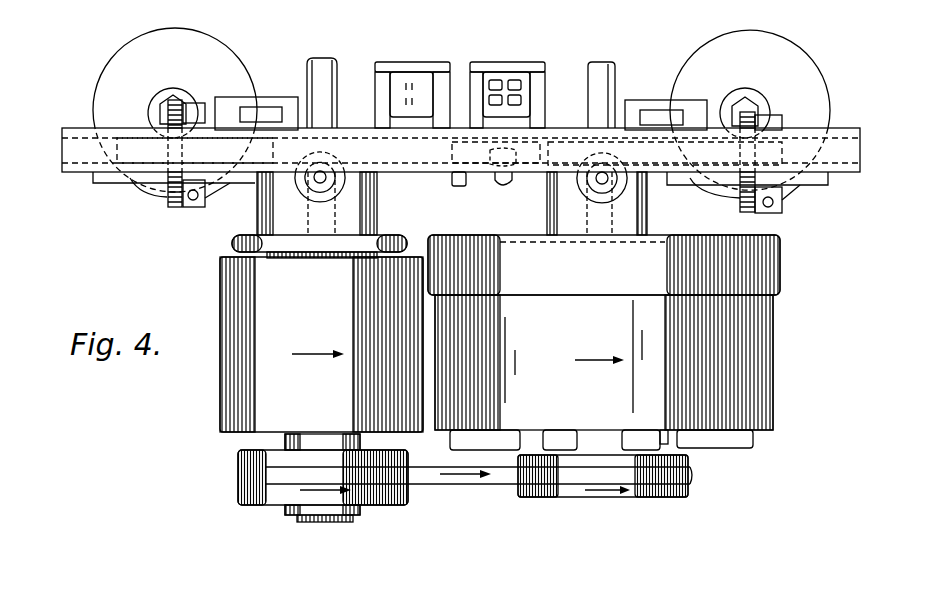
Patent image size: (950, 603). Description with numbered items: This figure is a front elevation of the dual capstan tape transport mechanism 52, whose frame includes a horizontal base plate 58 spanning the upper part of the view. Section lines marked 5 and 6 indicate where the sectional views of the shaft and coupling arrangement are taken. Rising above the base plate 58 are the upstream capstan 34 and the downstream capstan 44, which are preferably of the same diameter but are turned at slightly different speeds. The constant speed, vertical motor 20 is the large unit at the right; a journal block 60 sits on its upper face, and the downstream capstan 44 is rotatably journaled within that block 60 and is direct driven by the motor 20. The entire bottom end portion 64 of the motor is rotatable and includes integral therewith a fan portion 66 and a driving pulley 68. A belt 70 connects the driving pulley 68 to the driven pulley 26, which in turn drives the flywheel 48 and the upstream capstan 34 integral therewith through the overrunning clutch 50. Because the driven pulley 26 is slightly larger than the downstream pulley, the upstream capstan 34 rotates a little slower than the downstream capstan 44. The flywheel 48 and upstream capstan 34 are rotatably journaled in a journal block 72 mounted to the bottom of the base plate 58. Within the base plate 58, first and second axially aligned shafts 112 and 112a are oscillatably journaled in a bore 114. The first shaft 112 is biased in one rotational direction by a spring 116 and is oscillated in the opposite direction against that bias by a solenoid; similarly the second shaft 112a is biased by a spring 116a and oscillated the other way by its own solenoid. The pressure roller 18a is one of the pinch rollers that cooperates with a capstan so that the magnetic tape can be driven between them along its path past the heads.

The section line 5- 5 is at (196, 12).
The section line 6- 6 is at (277, 75).
The base plate 58 is at (73, 171).
The wheel 18a is at (720, 93).
The spring 116 is at (167, 198).
The spring 116a is at (740, 200).
The first shaft 112 is at (137, 142).
The second shaft 112a is at (568, 160).
The upstream capstan 34 is at (332, 60).
The downstream capstan 44 is at (612, 62).
The tape transport mechanism 52 is at (466, 42).
The bore 114 is at (452, 158).
The journal block 72 is at (360, 210).
The journal block 60 is at (552, 213).
The flywheel 48 is at (320, 330).
The motor 20 is at (585, 282).
The bottom end portion 64 is at (778, 297).
The fan portion 66 is at (737, 449).
The overrunning clutch 50 is at (284, 524).
The driven pulley 26 is at (252, 506).
The belt 70 is at (450, 485).
The driving pulley 68 is at (572, 492).